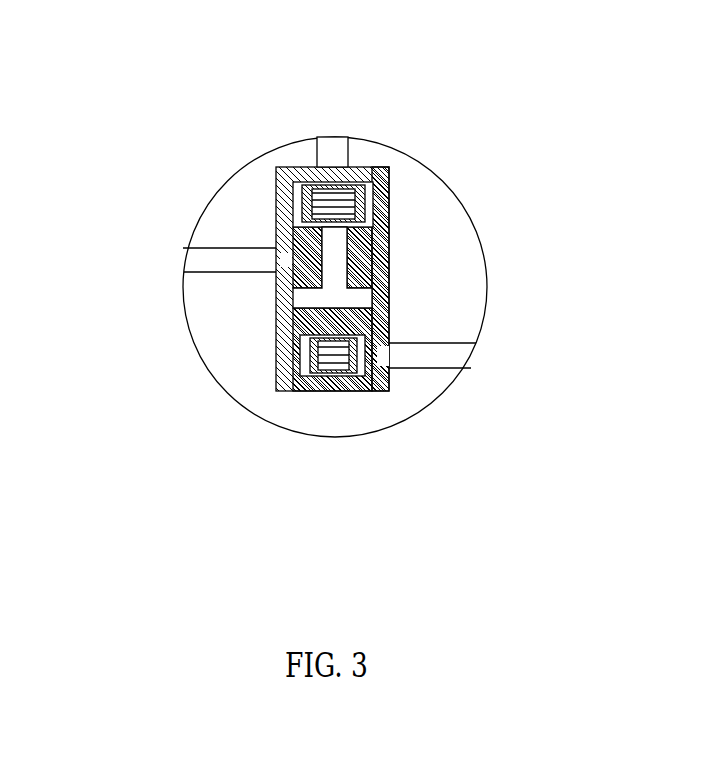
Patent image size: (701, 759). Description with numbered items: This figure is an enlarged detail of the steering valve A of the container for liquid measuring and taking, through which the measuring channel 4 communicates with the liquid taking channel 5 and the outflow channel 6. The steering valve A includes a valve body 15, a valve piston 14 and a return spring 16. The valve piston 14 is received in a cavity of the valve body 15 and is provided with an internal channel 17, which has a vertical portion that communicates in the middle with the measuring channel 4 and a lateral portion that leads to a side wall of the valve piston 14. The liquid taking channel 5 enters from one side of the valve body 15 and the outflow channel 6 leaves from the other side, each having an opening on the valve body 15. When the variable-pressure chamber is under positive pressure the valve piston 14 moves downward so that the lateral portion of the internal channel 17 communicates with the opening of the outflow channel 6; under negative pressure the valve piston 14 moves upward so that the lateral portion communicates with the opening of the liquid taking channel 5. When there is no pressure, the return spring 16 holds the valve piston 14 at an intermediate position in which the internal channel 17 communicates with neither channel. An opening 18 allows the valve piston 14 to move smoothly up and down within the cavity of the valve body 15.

The measuring channel 4 is at (330, 153).
The liquid taking channel 5 is at (217, 262).
The outflow channel 6 is at (452, 355).
The valve piston 14 is at (278, 336).
The valve body 15 is at (389, 212).
The return spring 16 is at (300, 186).
The internal channel 17 is at (340, 298).
The opening 18 is at (333, 390).
The steering valve A is at (447, 383).